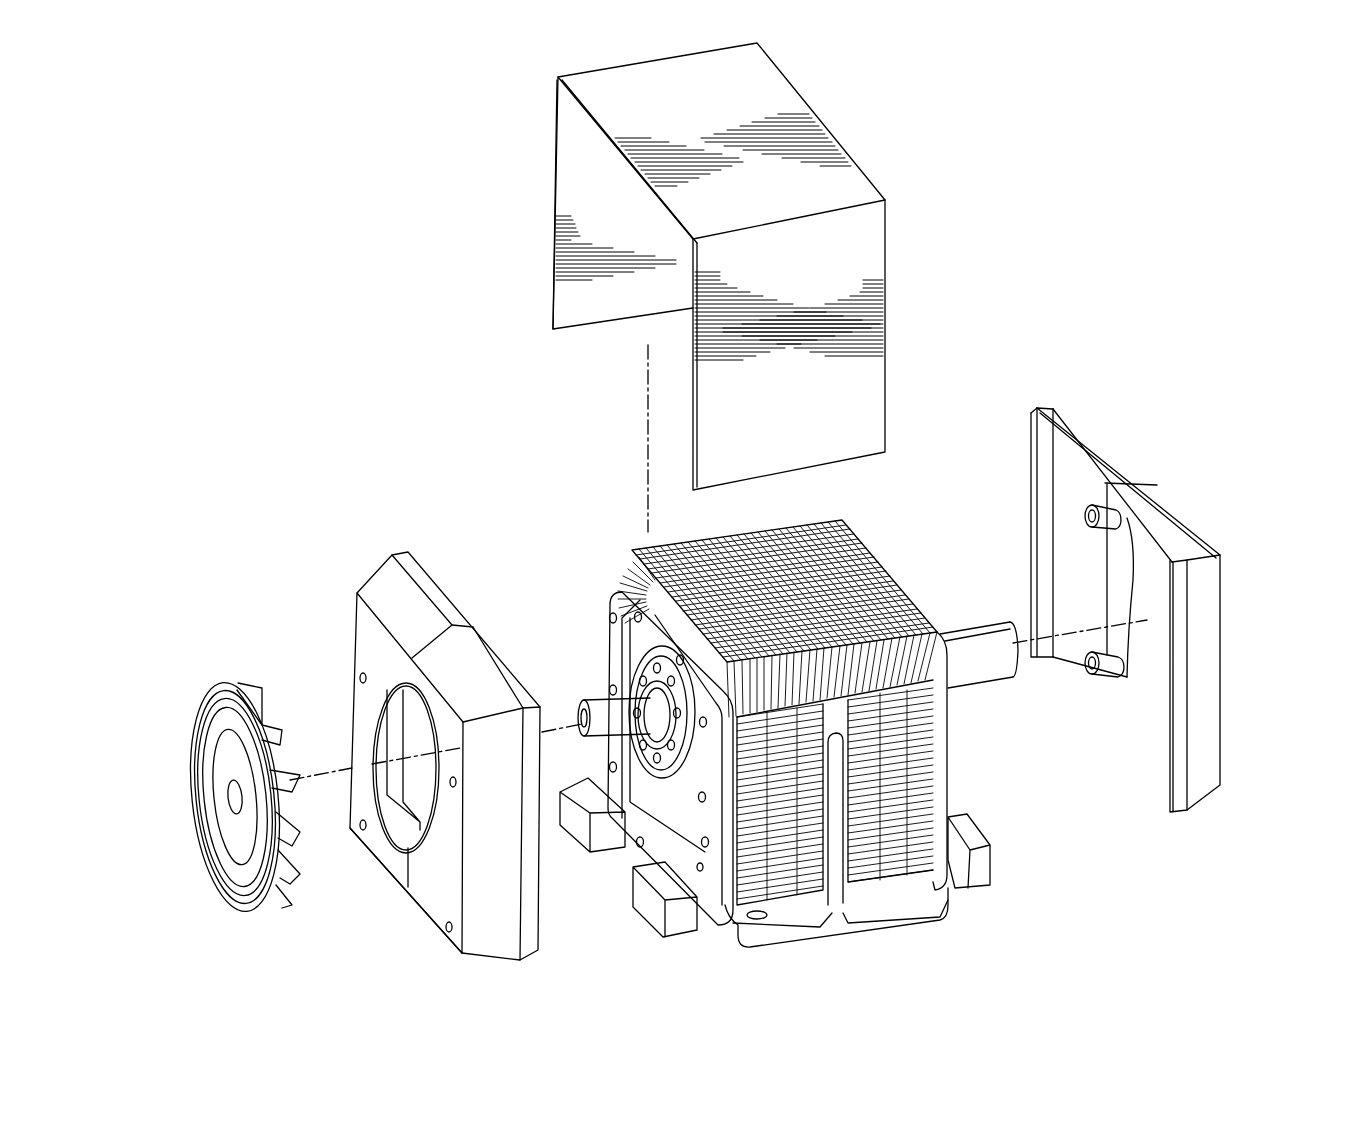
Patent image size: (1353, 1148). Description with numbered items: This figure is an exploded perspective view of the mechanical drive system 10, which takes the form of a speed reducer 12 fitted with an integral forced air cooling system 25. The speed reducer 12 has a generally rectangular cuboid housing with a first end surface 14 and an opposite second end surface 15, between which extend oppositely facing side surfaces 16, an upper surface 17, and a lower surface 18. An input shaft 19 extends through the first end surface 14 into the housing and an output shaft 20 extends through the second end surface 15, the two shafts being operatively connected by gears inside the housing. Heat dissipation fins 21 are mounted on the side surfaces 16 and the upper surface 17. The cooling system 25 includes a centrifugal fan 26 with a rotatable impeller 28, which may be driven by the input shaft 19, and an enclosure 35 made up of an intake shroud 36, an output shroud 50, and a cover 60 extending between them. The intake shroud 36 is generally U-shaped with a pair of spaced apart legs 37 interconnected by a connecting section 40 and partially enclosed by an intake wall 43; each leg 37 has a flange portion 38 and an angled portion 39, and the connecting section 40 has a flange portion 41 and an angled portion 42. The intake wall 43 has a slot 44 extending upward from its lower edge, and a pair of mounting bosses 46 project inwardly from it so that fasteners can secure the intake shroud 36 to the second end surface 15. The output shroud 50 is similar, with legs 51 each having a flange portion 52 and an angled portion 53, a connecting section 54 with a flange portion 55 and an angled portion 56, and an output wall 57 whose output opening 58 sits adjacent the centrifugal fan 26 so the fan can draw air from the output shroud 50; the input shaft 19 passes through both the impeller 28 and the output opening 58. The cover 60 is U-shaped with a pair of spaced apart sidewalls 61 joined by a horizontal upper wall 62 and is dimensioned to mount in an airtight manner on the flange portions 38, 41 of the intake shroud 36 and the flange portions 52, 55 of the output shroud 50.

The mechanical drive system 10 is at (360, 243).
The speed reducer 12 is at (582, 592).
The first end surface 14 is at (609, 648).
The second end surface 15 is at (946, 740).
The side surfaces 16 is at (833, 787).
The upper surface 17 is at (637, 582).
The lower surface 18 is at (808, 930).
The input shaft 19 is at (597, 702).
The output shaft 20 is at (967, 628).
The heat dissipation fins 21 is at (862, 545).
The forced air cooling system 25 is at (340, 318).
The centrifugal fan 26 is at (150, 738).
The impeller 28 is at (205, 683).
The enclosure 35 is at (407, 433).
The intake shroud 36 is at (1102, 442).
The legs 37 is at (1208, 640).
The flange portion 38 is at (1170, 812).
The angled portion 39 is at (1205, 742).
The connecting section 40 is at (1190, 537).
The flange portion 41 is at (1045, 405).
The angled portion 42 is at (1135, 475).
The intake wall 43 is at (1115, 585).
The slot 44 is at (1128, 636).
The mounting bosses 46 is at (1107, 660).
The output shroud 50 is at (383, 580).
The legs 51 is at (507, 928).
The flange portion 52 is at (537, 893).
The angled portion 53 is at (483, 942).
The connecting section 54 is at (410, 598).
The flange portion 55 is at (440, 602).
The angled portion 56 is at (483, 697).
The output wall 57 is at (363, 700).
The output opening 58 is at (410, 843).
The cover 60 is at (767, 95).
The sidewalls 61 is at (870, 268).
The upper wall 62 is at (835, 166).